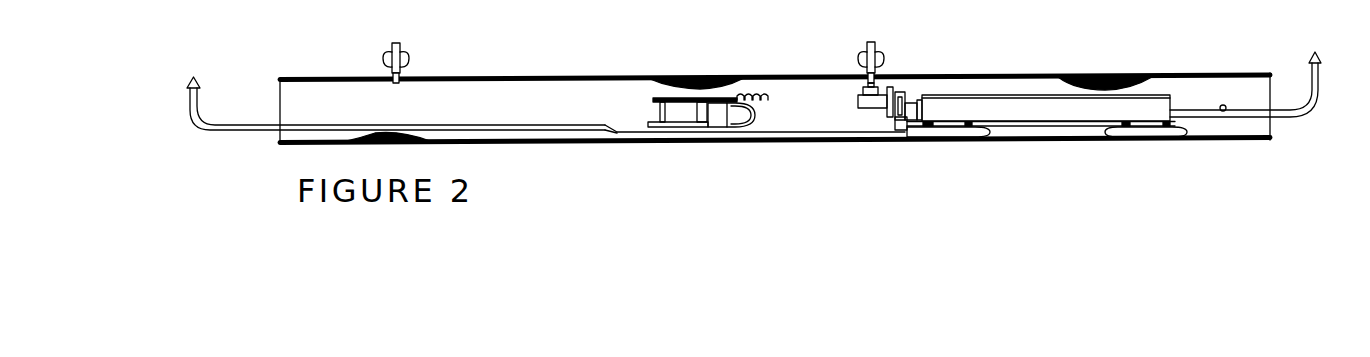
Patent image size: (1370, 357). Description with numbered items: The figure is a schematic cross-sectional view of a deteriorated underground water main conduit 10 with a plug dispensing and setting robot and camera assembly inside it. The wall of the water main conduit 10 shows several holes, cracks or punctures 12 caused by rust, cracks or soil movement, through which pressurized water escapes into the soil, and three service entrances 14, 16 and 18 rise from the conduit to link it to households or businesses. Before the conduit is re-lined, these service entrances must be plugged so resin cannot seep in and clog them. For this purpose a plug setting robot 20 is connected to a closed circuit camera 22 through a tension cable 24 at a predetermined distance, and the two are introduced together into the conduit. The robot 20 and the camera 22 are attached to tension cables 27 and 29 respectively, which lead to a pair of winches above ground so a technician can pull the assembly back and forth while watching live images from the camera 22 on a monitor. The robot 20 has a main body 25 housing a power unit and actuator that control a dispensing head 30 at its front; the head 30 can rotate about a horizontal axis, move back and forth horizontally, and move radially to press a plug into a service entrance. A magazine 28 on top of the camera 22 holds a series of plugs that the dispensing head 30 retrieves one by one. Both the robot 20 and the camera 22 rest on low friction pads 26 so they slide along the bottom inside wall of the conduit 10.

The water main conduit 10 is at (610, 75).
The holes, cracks or punctures 12 is at (373, 128).
The service entrance 14 is at (387, 43).
The service entrance 16 is at (863, 42).
The service entrance 18 is at (1219, 106).
The plug setting robot 20 is at (1045, 93).
The closed circuit camera 22 is at (715, 122).
The tension cable 24 is at (822, 132).
The main body 25 is at (1037, 115).
The low friction pads 26 is at (615, 140).
The tension cable 27 is at (1297, 118).
The magazine 28 is at (700, 100).
The tension cable 29 is at (230, 133).
The dispensing head 30 is at (857, 100).